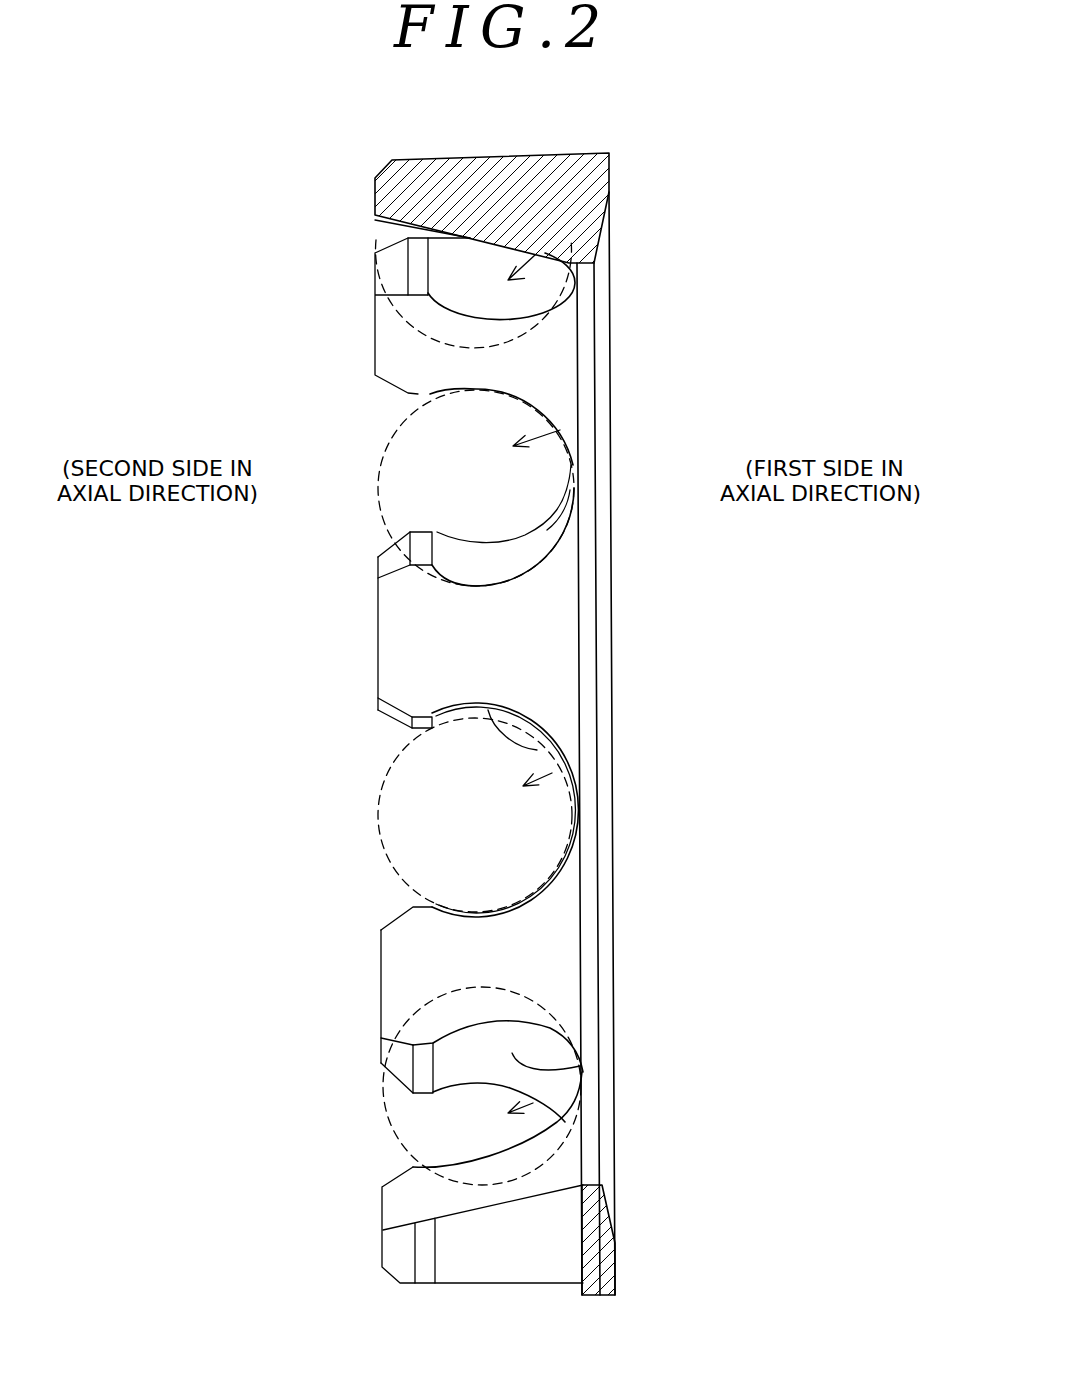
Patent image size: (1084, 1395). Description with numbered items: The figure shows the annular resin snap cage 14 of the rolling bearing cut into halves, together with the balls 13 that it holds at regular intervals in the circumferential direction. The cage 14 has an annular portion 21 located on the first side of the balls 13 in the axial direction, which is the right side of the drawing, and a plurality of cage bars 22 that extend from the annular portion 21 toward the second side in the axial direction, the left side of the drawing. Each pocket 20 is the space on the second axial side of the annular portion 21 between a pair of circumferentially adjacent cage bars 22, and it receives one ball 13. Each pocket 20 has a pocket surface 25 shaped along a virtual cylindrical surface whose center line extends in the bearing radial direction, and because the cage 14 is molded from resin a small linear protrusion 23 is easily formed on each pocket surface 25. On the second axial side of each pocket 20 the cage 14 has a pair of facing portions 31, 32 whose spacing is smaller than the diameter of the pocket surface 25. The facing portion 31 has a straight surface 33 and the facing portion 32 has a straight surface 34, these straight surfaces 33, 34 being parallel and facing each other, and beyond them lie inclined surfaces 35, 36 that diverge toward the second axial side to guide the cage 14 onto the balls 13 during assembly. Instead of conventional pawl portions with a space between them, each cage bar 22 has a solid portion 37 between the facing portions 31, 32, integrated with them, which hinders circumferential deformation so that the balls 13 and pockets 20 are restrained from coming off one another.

The ball 13 is at (398, 323).
The cage 14 is at (610, 317).
The pocket 20 is at (535, 255).
The annular portion 21 is at (595, 677).
The cage bar 22 is at (531, 375).
The small linear protrusion 23 is at (570, 490).
The pocket surface 25 is at (467, 263).
The facing portion 31 is at (398, 593).
The facing portion 32 is at (392, 684).
The straight surface 33 is at (420, 272).
The straight surface 34 is at (417, 725).
The inclined surface 35 is at (390, 556).
The inclined surface 36 is at (385, 713).
The solid portion 37 is at (398, 637).